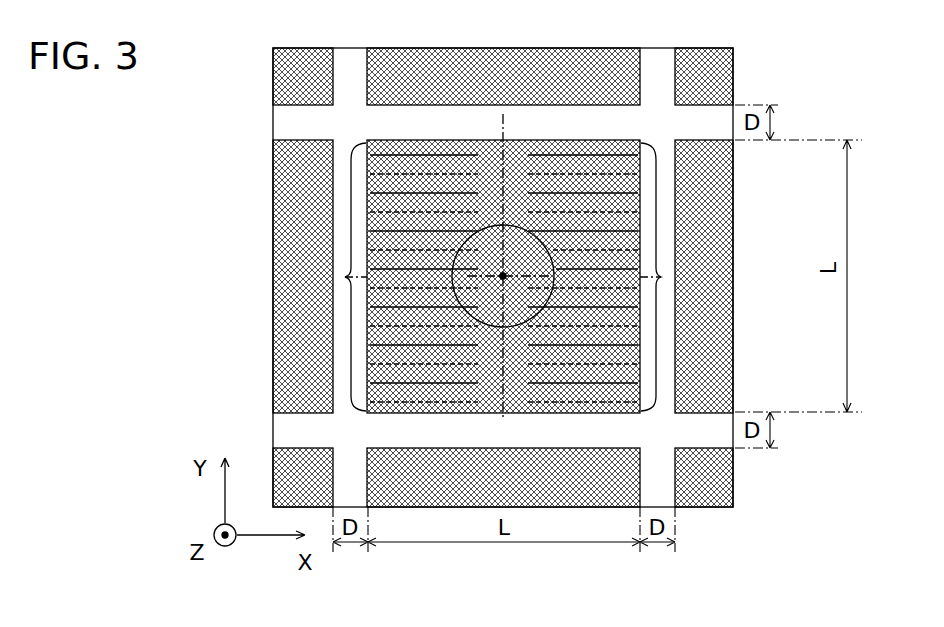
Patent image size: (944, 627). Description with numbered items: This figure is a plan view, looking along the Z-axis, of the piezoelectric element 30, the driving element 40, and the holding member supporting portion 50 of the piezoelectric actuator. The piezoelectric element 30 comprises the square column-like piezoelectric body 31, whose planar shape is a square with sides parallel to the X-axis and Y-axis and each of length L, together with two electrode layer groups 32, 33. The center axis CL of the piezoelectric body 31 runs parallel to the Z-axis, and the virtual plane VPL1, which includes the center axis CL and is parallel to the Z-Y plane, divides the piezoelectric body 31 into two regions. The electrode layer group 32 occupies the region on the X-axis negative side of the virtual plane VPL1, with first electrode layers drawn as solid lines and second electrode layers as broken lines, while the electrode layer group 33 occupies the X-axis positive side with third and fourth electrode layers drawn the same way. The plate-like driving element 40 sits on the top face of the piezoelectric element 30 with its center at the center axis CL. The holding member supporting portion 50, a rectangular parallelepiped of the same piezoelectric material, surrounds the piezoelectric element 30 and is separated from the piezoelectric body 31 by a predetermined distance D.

The piezoelectric element 30 is at (592, 121).
The piezoelectric body 31 is at (518, 140).
The electrode layer group 32 is at (345, 277).
The electrode layer group 33 is at (661, 277).
The driving element 40 is at (492, 328).
The holding member supporting portion 50 is at (300, 47).
The center axis CL is at (503, 276).
The virtual plane VPL1 is at (503, 121).